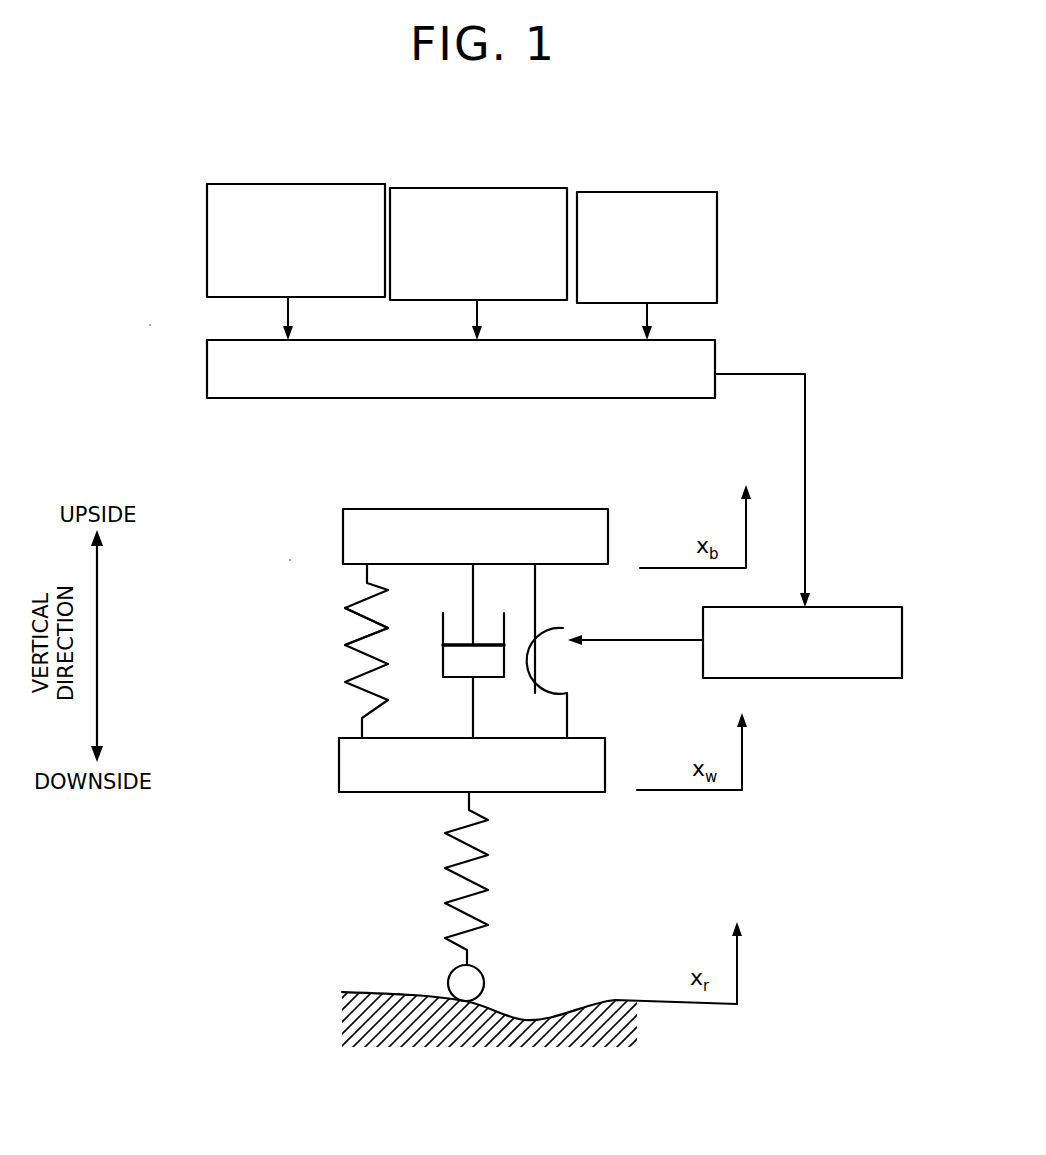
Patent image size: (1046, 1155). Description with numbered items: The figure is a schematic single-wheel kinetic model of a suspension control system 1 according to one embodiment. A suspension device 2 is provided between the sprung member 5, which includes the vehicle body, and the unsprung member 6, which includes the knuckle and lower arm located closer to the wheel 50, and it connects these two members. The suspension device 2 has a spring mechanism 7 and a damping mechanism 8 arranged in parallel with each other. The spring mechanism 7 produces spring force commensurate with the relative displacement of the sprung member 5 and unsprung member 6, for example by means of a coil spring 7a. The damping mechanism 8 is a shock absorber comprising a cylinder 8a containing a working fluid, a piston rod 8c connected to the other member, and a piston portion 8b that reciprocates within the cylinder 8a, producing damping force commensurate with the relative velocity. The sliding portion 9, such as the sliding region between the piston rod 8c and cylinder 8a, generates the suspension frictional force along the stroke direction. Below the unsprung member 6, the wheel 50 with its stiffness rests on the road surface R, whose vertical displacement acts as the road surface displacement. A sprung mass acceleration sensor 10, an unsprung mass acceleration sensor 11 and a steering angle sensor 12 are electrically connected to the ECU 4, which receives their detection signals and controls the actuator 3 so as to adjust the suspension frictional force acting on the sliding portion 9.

The suspension control system 1 is at (137, 313).
The suspension device 2 is at (272, 546).
The actuator 3 is at (848, 607).
The ECU 4 is at (685, 341).
The sprung member 5 is at (343, 533).
The unsprung member 6 is at (339, 759).
The spring mechanism 7 is at (338, 589).
The coil spring 7a is at (347, 611).
The damping mechanism 8 is at (456, 650).
The cylinder 8a is at (442, 673).
The piston portion 8b is at (452, 653).
The piston rod 8c is at (476, 584).
The sliding portion 9 is at (554, 623).
The sprung mass acceleration sensor 10 is at (330, 184).
The unsprung mass acceleration sensor 11 is at (505, 188).
The steering angle sensor 12 is at (688, 192).
The wheel 50 is at (484, 985).
The road surface R is at (366, 994).